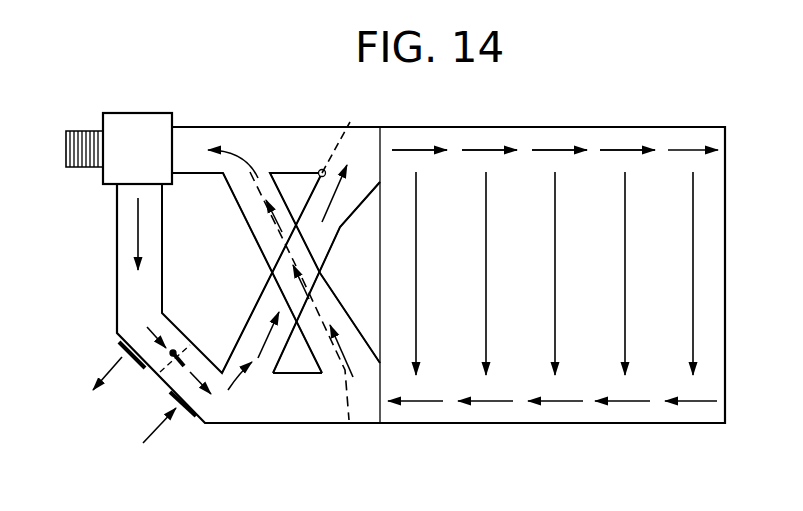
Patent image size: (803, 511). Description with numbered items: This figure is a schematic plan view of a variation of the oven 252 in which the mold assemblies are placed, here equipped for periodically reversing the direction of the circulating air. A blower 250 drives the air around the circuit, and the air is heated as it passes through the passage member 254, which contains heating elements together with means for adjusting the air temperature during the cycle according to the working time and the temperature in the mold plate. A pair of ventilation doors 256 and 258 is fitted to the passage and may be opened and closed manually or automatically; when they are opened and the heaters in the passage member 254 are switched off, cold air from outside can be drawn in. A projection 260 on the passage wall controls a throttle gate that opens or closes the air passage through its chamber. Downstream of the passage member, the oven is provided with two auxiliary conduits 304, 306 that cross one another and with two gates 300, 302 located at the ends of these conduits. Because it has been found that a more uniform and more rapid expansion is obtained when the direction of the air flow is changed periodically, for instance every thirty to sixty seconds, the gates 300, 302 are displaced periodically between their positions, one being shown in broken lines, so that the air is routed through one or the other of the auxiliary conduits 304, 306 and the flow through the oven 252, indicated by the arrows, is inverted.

The blower 250 is at (138, 113).
The oven 252 is at (552, 424).
The passage member 254 is at (118, 284).
The ventilation door 256 is at (120, 346).
The ventilation door 258 is at (186, 414).
The projection 260 is at (192, 350).
The gate 300 is at (348, 148).
The gate 302 is at (350, 418).
The auxiliary conduit 304 is at (243, 197).
The auxiliary conduit 306 is at (328, 236).